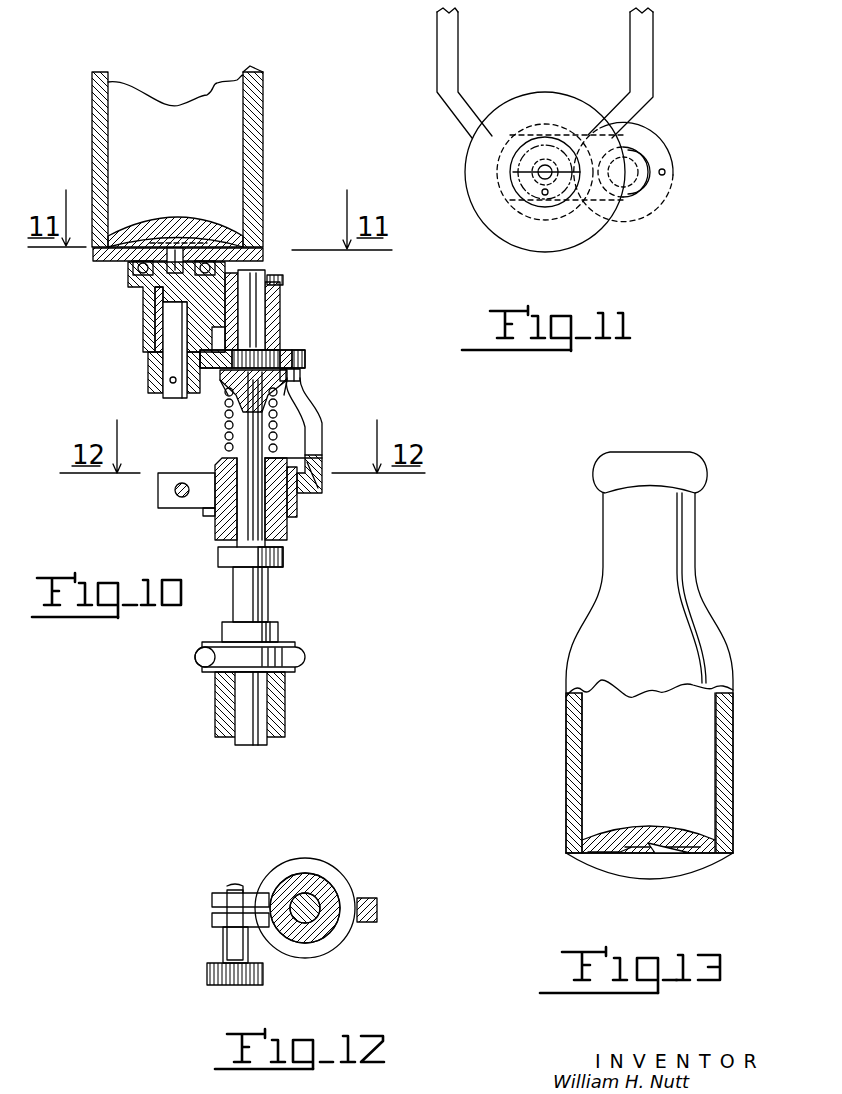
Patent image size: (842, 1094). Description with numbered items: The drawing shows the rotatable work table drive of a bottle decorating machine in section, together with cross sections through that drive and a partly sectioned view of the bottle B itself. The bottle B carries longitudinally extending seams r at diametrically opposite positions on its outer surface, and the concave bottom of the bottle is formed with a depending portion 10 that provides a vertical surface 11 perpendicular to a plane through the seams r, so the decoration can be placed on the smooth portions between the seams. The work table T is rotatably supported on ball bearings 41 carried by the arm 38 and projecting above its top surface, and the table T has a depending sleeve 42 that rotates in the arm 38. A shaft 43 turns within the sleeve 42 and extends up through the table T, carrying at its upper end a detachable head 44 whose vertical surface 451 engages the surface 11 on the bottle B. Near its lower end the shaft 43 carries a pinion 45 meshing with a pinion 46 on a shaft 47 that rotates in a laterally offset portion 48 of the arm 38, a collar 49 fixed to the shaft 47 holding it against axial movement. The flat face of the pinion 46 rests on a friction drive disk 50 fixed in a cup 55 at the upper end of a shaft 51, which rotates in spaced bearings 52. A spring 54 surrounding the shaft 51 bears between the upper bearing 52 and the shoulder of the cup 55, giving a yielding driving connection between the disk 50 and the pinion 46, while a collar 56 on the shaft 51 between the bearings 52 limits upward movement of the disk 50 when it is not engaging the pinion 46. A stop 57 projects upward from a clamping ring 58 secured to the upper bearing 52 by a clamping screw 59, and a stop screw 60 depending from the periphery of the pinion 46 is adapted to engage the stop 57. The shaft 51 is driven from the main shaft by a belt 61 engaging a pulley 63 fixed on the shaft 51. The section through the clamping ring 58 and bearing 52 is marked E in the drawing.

In FIG. 13, the depending portion 10 is at (630, 847).
In FIG. 10, the vertical surface 11 is at (203, 240).
In FIG. 13, the vertical surface 11 is at (660, 852).
In FIG. 10, the arm 38 is at (143, 298).
In FIG. 11, the arm 38 is at (641, 52).
In FIG. 10, the ball bearings 41 is at (131, 268).
In FIG. 10, the depending sleeve 42 is at (152, 322).
In FIG. 10, the shaft 43 is at (170, 392).
In FIG. 10, the detachable head 44 is at (150, 242).
In FIG. 10, the pinion 45 is at (150, 362).
In FIG. 10, the pinion 46 is at (262, 357).
In FIG. 10, the shaft 47 is at (256, 335).
In FIG. 11, the shaft 47 is at (638, 168).
In FIG. 10, the laterally offset portion 48 is at (280, 300).
In FIG. 10, the collar 49 is at (284, 279).
In FIG. 11, the collar 49 is at (640, 190).
In FIG. 10, the friction drive disk 50 is at (226, 376).
In FIG. 10, the shaft 51 is at (266, 590).
In FIG. 10, the bearings 52 is at (286, 536).
In FIG. 12, the bearings 52 is at (324, 928).
In FIG. 10, the spring 54 is at (228, 440).
In FIG. 10, the cup 55 is at (232, 388).
In FIG. 10, the collar 56 is at (230, 556).
In FIG. 10, the stop 57 is at (310, 424).
In FIG. 12, the stop 57 is at (377, 908).
In FIG. 10, the clamping ring 58 is at (290, 500).
In FIG. 12, the clamping ring 58 is at (310, 863).
In FIG. 10, the clamping screw 59 is at (180, 491).
In FIG. 12, the clamping screw 59 is at (236, 946).
In FIG. 10, the stop screw 60 is at (298, 371).
In FIG. 11, the stop screw 60 is at (670, 172).
In FIG. 10, the belt 61 is at (285, 648).
In FIG. 10, the pulley 63 is at (300, 666).
In FIG. 11, the vertical surface 451 is at (525, 170).
In FIG. 10, the work table T is at (257, 245).
In FIG. 11, the work table T is at (552, 95).
In FIG. 10, the eccentric E is at (288, 394).
In FIG. 11, the eccentric E is at (665, 207).
In FIG. 12, the eccentric E is at (310, 922).
In FIG. 13, the bottle B is at (630, 587).
In FIG. 13, the seams r is at (682, 552).